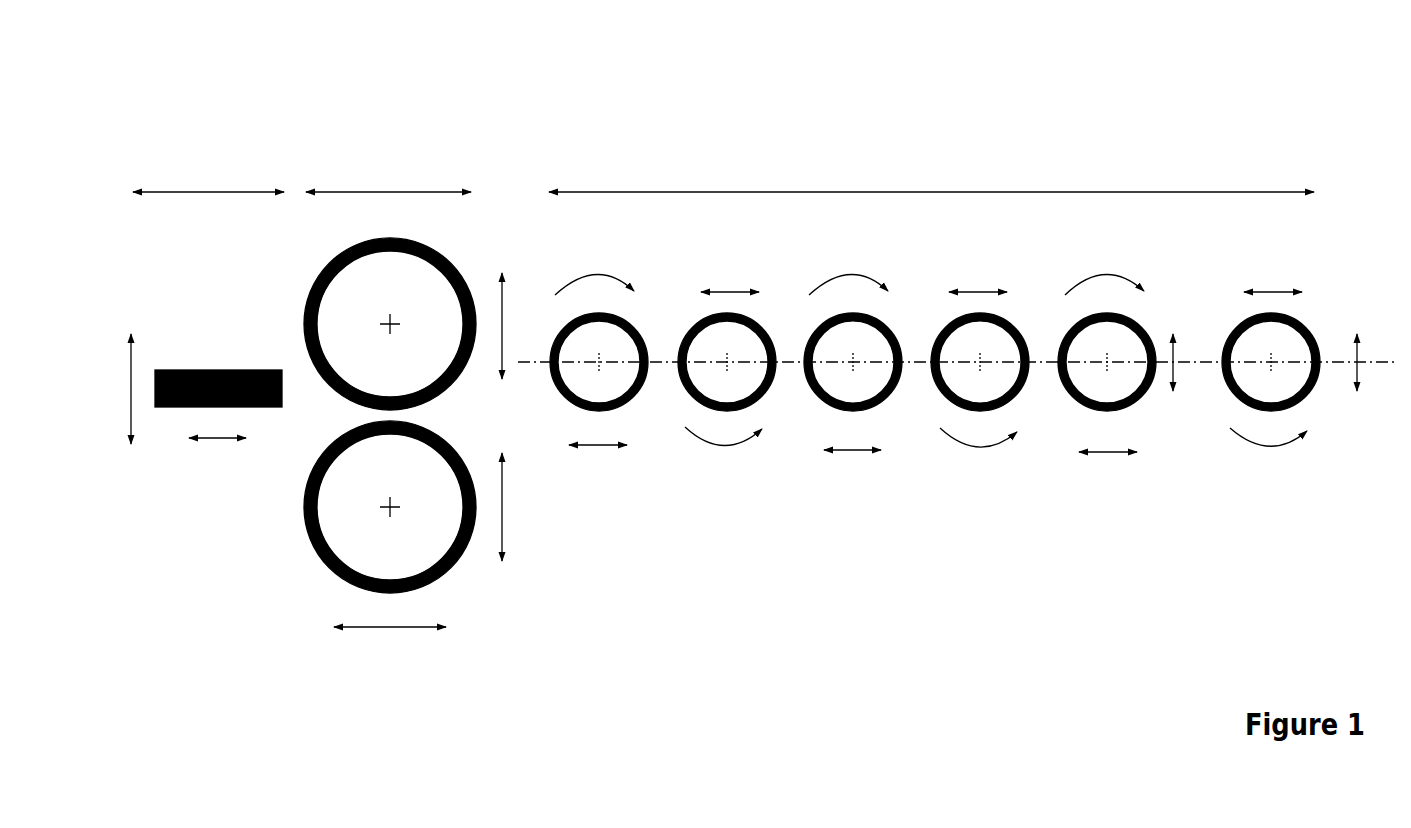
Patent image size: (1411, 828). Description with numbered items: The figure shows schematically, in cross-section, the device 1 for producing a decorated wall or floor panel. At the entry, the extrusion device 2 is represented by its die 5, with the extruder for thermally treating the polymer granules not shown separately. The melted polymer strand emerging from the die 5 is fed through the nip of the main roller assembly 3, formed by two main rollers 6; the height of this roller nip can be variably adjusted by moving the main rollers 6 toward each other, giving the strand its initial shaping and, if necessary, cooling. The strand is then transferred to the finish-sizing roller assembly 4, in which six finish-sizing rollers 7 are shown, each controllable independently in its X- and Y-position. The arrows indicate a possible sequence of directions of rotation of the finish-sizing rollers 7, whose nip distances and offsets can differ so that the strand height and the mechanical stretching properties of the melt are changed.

The device 1 is at (571, 91).
The extrusion device 2 is at (212, 164).
The main roller assembly 3 is at (391, 164).
The finish-sizing roller assembly 4 is at (956, 164).
The die 5 is at (216, 471).
The main roller 6 is at (317, 584).
The finish-sizing roller 7 is at (969, 464).